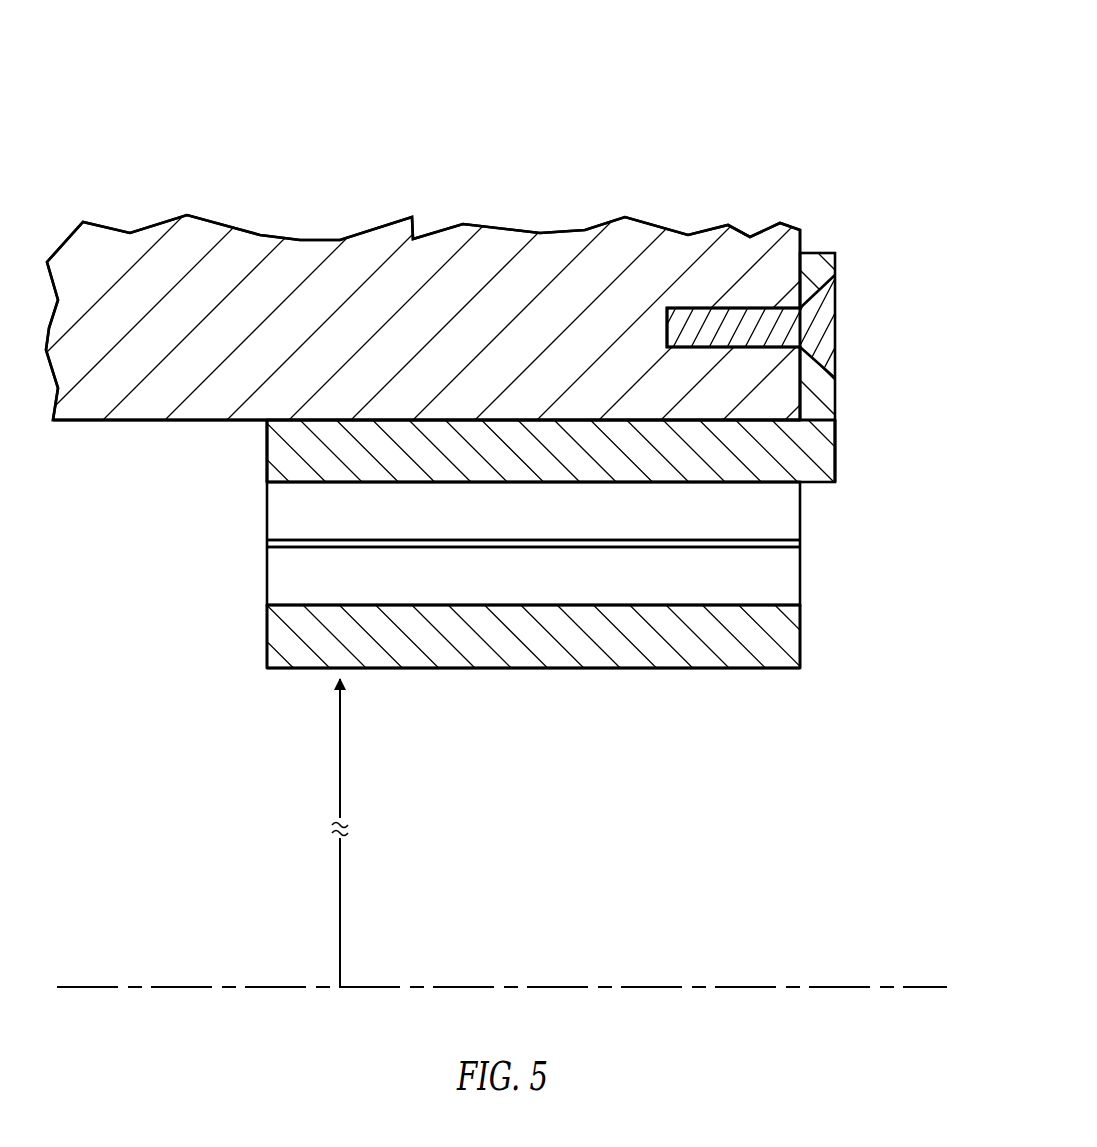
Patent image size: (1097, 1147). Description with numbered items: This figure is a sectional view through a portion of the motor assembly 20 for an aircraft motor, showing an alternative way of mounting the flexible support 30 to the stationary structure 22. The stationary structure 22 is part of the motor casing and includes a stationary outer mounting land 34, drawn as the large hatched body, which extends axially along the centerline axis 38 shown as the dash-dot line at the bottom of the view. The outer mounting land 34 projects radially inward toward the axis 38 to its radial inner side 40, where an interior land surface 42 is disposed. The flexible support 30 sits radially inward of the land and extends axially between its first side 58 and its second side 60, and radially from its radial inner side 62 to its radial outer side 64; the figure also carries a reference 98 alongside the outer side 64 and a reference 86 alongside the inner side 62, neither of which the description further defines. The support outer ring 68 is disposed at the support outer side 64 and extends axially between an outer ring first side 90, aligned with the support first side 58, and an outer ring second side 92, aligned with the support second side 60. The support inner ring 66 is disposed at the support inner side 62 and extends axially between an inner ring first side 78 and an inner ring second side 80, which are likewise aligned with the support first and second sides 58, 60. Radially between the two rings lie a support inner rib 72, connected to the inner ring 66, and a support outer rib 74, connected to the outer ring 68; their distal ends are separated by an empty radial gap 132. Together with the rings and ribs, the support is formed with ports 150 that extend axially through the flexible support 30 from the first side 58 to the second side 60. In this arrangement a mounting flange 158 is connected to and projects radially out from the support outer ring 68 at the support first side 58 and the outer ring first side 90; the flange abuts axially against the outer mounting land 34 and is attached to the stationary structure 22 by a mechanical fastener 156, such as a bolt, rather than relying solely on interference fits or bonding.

The assembly 20 is at (507, 216).
The stationary structure 22 is at (757, 218).
The outer mounting land 34 is at (428, 270).
The mounting flange 158 is at (802, 296).
The mechanical fastener 156 is at (837, 320).
The first side 58 is at (837, 443).
The outer ring first side 90 is at (897, 450).
The radial inner side 40 is at (82, 422).
The interior land surface 42 is at (155, 463).
The radial outer side 64 is at (353, 418).
The body interface surface 98 is at (533, 378).
The flexible support 30 is at (551, 584).
The support outer ring 68 is at (558, 463).
The second side 60 is at (267, 453).
The outer ring second side 92 is at (205, 451).
The port 150 is at (517, 549).
The support outer rib 74 is at (251, 517).
The radial gap 132 is at (251, 543).
The support inner rib 72 is at (249, 588).
The support inner ring 66 is at (558, 646).
The inner ring second side 80 is at (267, 640).
The inner ring first side 78 is at (803, 640).
The radial inner side 62 is at (412, 668).
The lower plate bottom surface 86 is at (533, 709).
The axis 38 is at (75, 989).